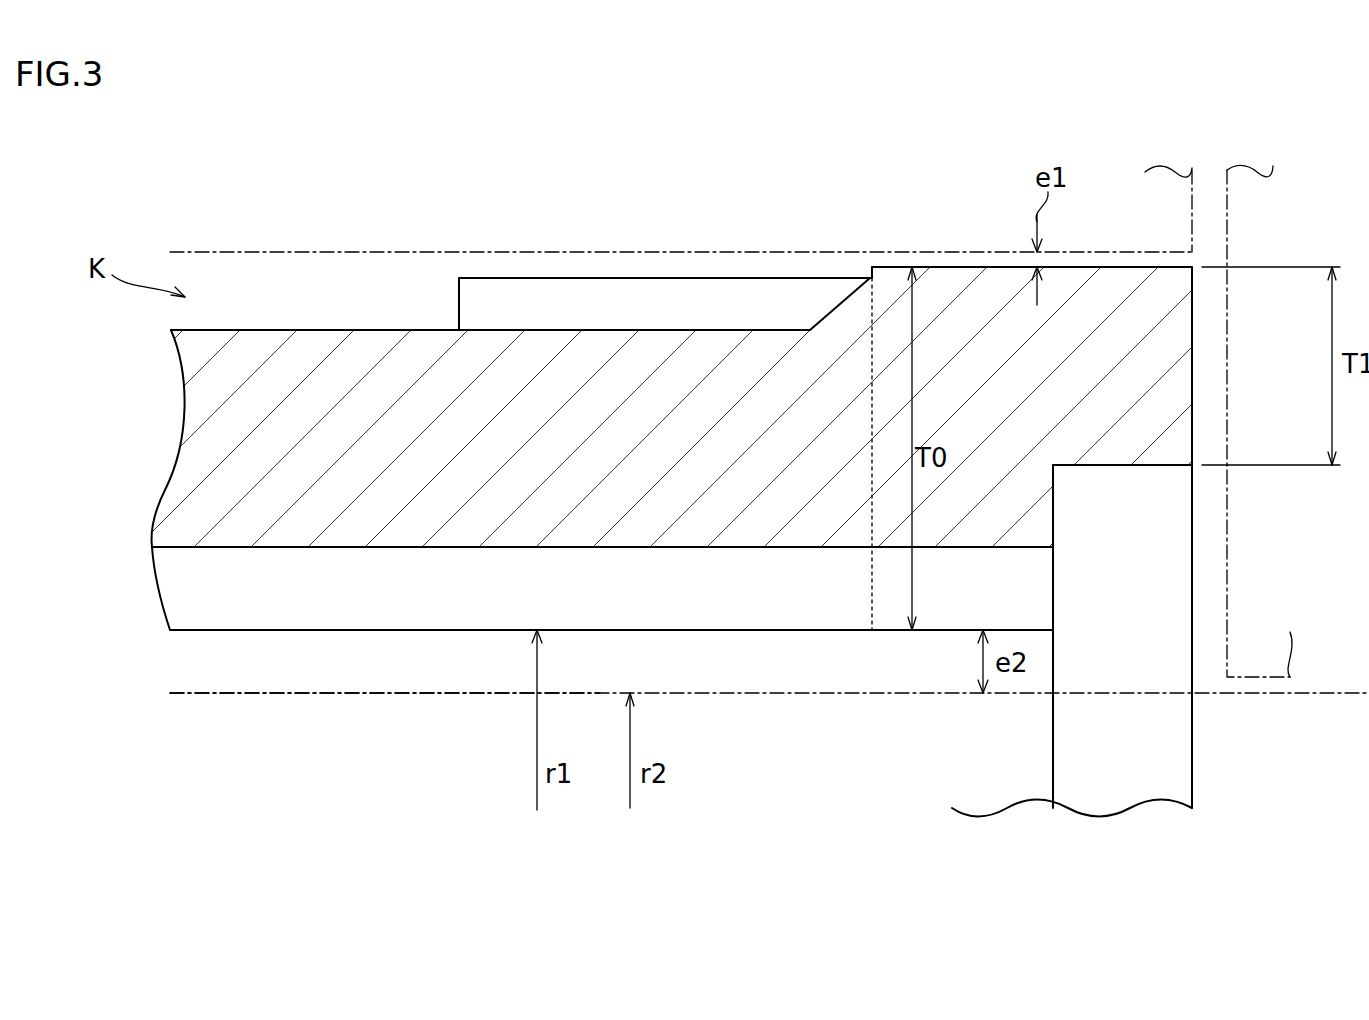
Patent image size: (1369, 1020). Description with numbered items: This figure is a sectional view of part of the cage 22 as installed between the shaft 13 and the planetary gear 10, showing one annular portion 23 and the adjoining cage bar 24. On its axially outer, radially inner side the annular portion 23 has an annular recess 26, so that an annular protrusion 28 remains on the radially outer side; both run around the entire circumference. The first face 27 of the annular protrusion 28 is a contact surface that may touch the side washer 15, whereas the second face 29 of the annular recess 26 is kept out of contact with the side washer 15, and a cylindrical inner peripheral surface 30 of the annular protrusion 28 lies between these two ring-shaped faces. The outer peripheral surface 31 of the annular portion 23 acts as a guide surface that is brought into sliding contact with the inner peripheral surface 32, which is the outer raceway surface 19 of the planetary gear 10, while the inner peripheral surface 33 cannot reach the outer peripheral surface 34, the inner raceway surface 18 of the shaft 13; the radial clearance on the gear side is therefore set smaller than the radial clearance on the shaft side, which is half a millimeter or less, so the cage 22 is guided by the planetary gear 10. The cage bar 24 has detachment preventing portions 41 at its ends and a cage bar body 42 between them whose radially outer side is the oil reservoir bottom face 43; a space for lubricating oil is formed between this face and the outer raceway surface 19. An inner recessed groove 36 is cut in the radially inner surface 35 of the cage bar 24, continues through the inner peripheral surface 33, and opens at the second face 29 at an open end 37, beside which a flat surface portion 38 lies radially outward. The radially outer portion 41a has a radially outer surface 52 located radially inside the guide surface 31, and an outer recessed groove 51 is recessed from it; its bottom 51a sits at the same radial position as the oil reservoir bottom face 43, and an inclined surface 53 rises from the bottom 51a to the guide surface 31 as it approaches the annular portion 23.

The planetary gear 10 is at (1200, 200).
The shaft 13 is at (253, 693).
The side washer 15 is at (1257, 693).
The inner raceway surface 18 is at (715, 693).
The outer raceway surface 19 is at (522, 252).
The cage 22 is at (290, 330).
The annular portion 23 is at (990, 300).
The cage bar 24 is at (348, 358).
The annular recess 26 is at (1072, 567).
The first face 27 is at (1192, 373).
The annular protrusion 28 is at (1192, 328).
The second face 29 is at (1053, 518).
The inner peripheral surface of annular protrusion 30 is at (1160, 465).
The outer peripheral surface (guide surface) 31 is at (947, 267).
The inner peripheral surface of planetary gear 32 is at (1090, 258).
The inner peripheral surface of annular portion 33 is at (942, 630).
The outer peripheral surface of shaft 34 is at (1130, 693).
The radially inner surface 35 is at (388, 630).
The inner recessed groove 36 is at (452, 630).
The open end 37 is at (1053, 595).
The second flat surface portion 38 is at (1053, 490).
The detachment preventing portion 41 is at (459, 305).
The radially outer portion 41a is at (652, 278).
The cage bar body 42 is at (325, 507).
The oil reservoir bottom face 43 is at (222, 330).
The outer recessed groove 51 is at (715, 298).
The bottom of outer recessed groove 51a is at (575, 330).
The radially outer surface 52 is at (775, 278).
The inclined surface 53 is at (840, 303).